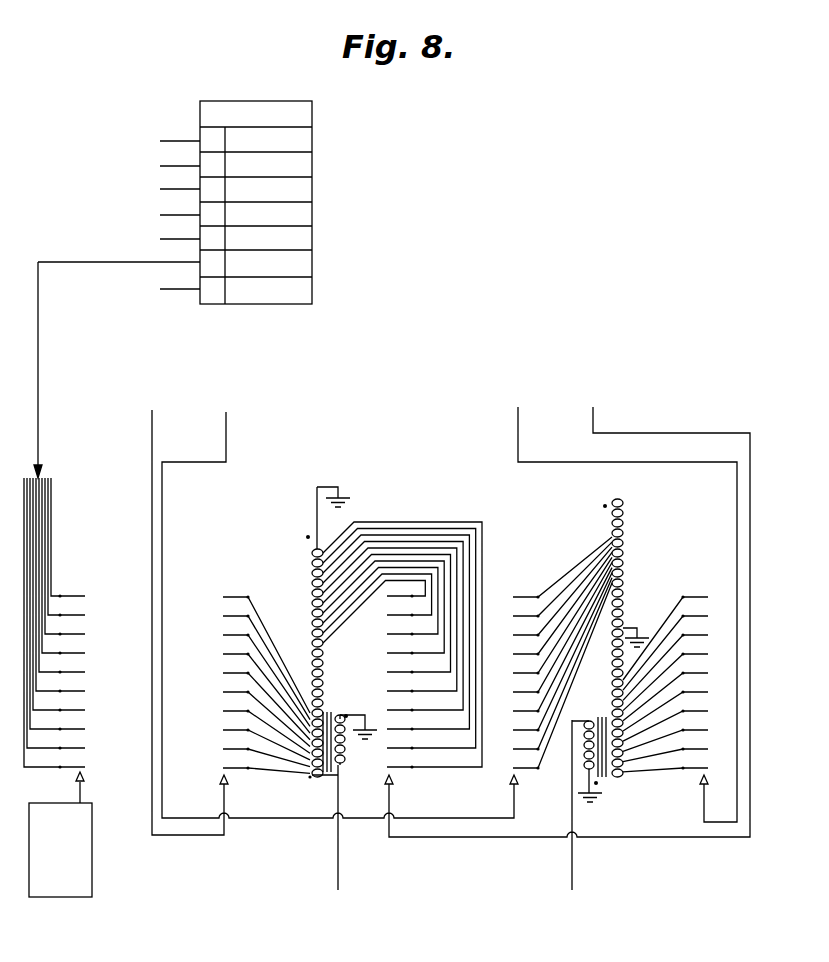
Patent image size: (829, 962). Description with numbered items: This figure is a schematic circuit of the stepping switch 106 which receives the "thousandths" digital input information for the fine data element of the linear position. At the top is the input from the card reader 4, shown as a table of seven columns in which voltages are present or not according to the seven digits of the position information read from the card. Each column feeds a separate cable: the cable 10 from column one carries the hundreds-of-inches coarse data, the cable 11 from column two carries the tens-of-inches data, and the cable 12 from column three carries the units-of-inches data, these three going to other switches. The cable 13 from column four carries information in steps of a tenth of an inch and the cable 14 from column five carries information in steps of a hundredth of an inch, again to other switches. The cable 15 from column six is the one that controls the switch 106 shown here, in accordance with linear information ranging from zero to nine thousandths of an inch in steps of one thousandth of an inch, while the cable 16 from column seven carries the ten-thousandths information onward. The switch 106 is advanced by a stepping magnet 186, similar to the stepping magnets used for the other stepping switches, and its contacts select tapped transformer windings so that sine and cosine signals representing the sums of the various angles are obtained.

The input from the card reader 4 is at (270, 101).
The cable 10 is at (186, 141).
The cable 11 is at (186, 166).
The cable 12 is at (186, 189).
The cable 13 is at (186, 215).
The cable 14 is at (186, 239).
The cable 15 is at (186, 262).
The cable 16 is at (186, 289).
The stepping switch 106 is at (443, 491).
The stepping magnet 186 is at (60, 834).